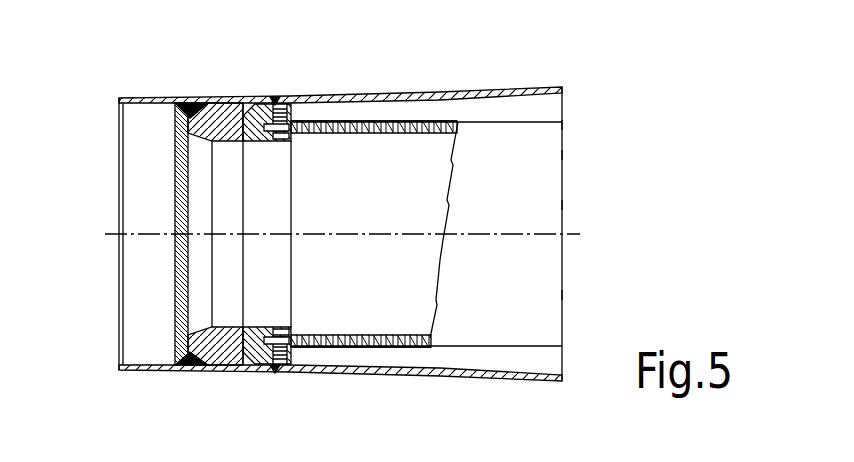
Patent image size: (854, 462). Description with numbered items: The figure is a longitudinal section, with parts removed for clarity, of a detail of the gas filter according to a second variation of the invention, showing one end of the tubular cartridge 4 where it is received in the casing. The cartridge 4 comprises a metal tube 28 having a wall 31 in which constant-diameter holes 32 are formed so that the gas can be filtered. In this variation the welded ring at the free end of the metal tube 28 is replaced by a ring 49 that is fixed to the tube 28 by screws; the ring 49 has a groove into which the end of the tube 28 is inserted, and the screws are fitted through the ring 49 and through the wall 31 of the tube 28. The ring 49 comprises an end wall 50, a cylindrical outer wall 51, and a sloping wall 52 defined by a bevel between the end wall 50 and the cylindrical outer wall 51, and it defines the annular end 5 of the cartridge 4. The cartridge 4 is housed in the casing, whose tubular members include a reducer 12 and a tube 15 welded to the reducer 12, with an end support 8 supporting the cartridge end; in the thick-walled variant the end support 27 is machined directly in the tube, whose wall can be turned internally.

The tubular cartridge 4 is at (589, 192).
The annular end 5 is at (268, 146).
The end support 8 is at (225, 314).
The reducer 12 is at (499, 90).
The tube 15 is at (147, 98).
The end support 27 is at (218, 350).
The metal tube 28 is at (565, 216).
The wall 31 is at (411, 134).
The constant-diameter holes 32 is at (371, 133).
The ring 49 is at (250, 363).
The end wall 50 is at (178, 134).
The cylindrical outer wall 51 is at (291, 104).
The sloping wall 52 is at (250, 104).